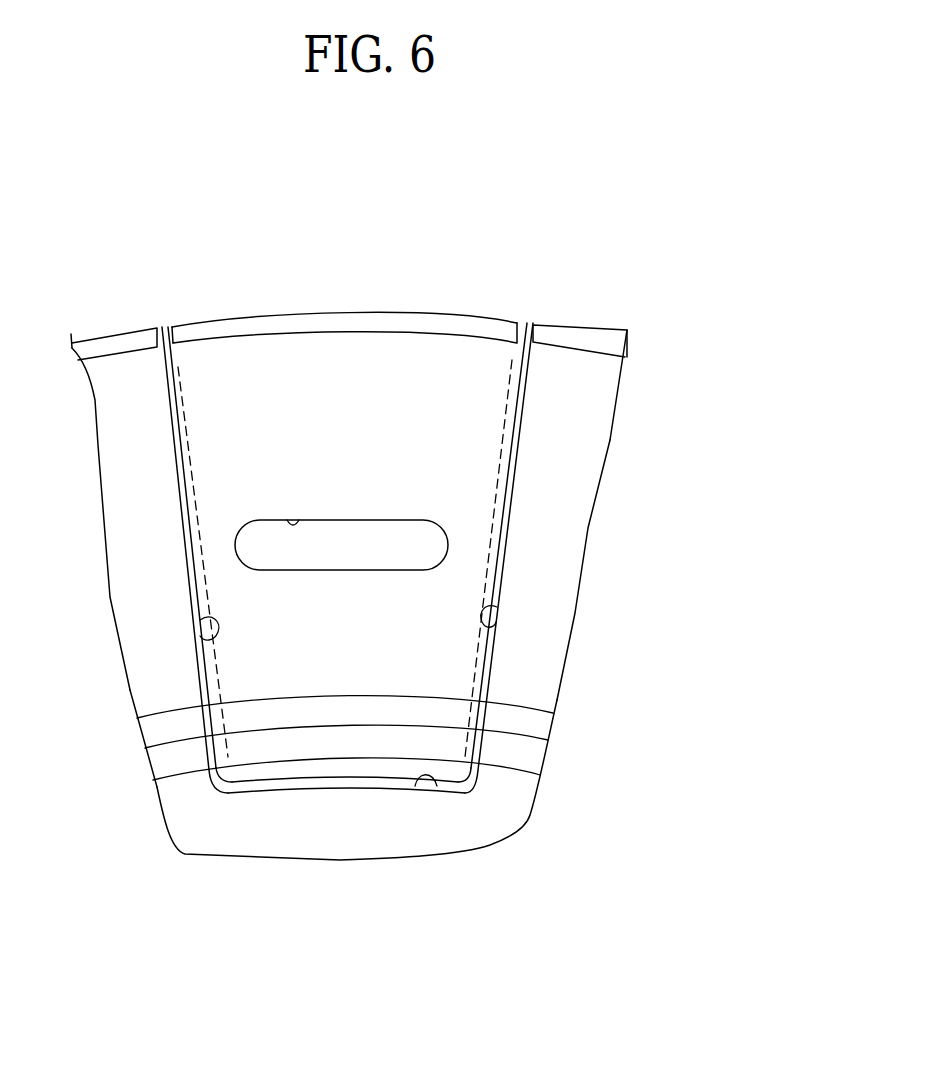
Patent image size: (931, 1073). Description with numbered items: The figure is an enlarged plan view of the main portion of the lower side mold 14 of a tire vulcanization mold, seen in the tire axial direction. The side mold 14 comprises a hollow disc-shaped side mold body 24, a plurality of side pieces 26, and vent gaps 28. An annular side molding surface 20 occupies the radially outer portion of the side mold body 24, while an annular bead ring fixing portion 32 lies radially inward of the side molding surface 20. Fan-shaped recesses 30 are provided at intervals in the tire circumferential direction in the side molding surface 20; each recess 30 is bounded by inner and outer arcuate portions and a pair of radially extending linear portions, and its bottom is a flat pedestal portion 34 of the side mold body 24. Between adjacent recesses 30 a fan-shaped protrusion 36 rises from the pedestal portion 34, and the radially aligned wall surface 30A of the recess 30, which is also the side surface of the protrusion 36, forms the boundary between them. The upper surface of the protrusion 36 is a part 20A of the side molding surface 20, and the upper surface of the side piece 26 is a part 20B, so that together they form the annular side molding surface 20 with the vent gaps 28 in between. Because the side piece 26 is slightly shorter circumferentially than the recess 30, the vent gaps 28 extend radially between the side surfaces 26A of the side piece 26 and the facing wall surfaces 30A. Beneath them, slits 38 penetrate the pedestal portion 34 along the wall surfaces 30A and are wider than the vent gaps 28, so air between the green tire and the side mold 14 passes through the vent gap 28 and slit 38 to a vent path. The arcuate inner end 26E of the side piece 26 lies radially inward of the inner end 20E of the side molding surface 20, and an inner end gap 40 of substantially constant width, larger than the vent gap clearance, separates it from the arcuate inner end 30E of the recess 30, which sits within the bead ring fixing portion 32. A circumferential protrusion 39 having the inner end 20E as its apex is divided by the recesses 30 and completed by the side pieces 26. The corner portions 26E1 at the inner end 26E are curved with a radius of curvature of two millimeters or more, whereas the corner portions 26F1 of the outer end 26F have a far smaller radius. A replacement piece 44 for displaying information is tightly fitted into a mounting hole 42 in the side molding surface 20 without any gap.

The side mold 14 is at (356, 229).
The side molding surface 20 is at (395, 575).
The part of side molding surface on protrusion 20A is at (577, 495).
The part of side molding surface on side piece 20B is at (510, 462).
The inner end of side molding surface 20E is at (433, 722).
The side mold body 24 is at (512, 813).
The side piece 26 is at (338, 348).
The side surface of side piece 26A is at (197, 587).
The inner end of side piece 26E is at (303, 780).
The corner portion of inner end 26E1 is at (222, 793).
The outer end of side piece 26F is at (298, 328).
The corner portion of outer end 26F1 is at (163, 323).
The vent gap 28 is at (185, 547).
The recess 30 is at (455, 308).
The wall surface of recess 30A is at (207, 618).
The inner end of recess 30E is at (416, 778).
The bead ring fixing portion 32 is at (177, 822).
The pedestal portion 34 is at (410, 323).
The protrusion 36 is at (98, 367).
The slit 38 is at (187, 410).
The protrusion 39 is at (532, 728).
The inner end gap 40 is at (357, 785).
The mounting hole 42 is at (292, 519).
The replacement piece 44 is at (367, 520).